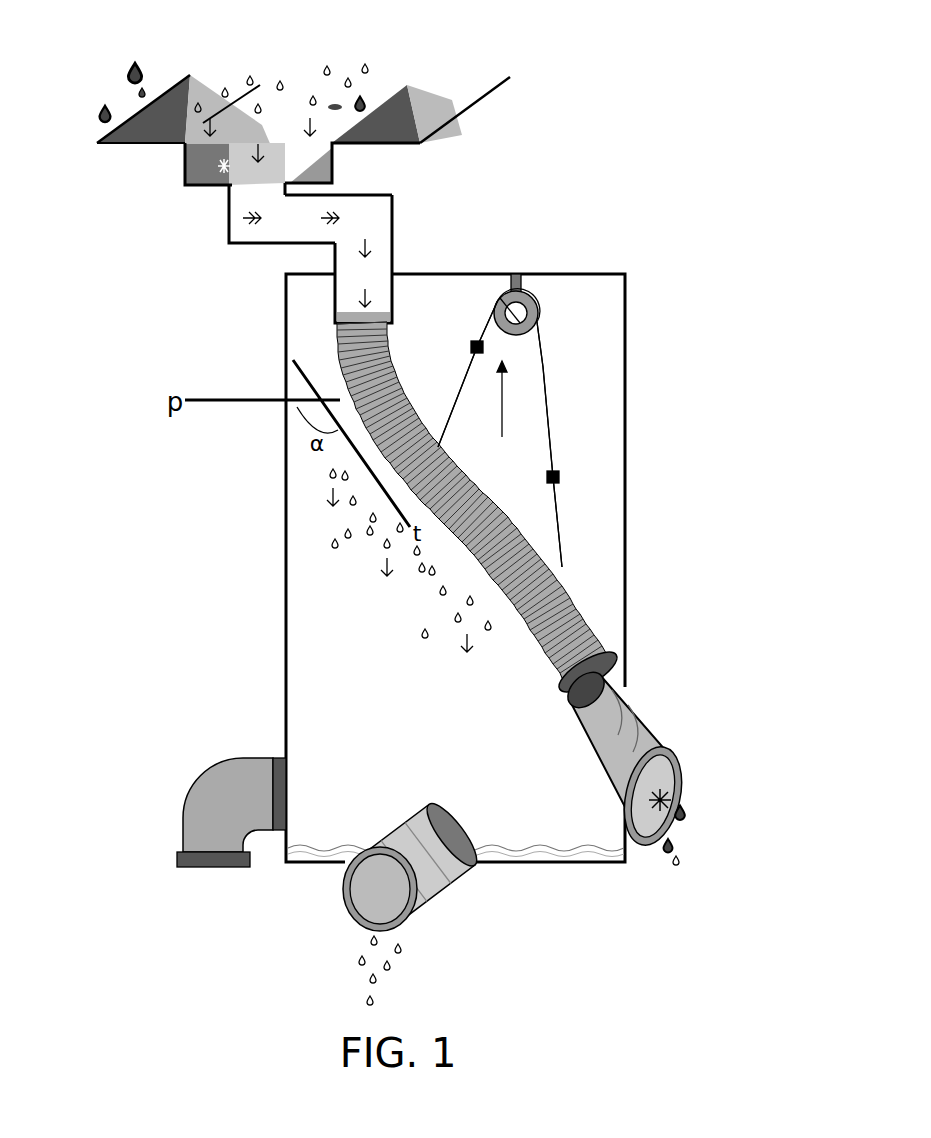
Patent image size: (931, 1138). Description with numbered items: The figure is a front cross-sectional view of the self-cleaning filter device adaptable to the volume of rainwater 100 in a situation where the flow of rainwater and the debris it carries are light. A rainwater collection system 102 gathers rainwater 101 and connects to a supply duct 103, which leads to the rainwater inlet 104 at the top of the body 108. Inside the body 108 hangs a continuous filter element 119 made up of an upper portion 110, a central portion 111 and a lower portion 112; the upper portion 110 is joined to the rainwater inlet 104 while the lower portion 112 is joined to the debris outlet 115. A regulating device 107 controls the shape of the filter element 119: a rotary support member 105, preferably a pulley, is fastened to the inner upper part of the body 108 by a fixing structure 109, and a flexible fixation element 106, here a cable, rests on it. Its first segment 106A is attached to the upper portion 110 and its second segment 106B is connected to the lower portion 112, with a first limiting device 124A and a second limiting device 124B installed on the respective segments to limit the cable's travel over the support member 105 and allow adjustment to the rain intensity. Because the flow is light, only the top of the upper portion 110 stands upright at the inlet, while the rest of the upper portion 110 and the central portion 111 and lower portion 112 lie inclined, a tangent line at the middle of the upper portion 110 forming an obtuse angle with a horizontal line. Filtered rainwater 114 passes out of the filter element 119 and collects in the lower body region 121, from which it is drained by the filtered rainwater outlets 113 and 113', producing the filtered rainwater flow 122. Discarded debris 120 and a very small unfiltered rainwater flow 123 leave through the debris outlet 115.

The self-cleaning filter device adaptable to the volume of rainwater 100 is at (226, 288).
The rainwater 101 is at (251, 73).
The rainwater collection system 102 is at (185, 165).
The supply duct 103 is at (229, 223).
The rainwater inlet 104 is at (335, 262).
The rotary support member 105 is at (497, 296).
The flexible fixation element 106 is at (557, 493).
The first segment 106A is at (443, 447).
The second segment 106B is at (545, 365).
The regulating device 107 is at (503, 415).
The body 108 is at (627, 407).
The fixing structure 109 is at (519, 283).
The upper portion 110 is at (335, 350).
The central portion 111 is at (460, 557).
The lower portion 112 is at (555, 660).
The filtered rainwater outlet 113 is at (195, 812).
The filtered rainwater outlet 113' is at (435, 864).
The filtered rainwater 114 is at (417, 605).
The debris outlet 115 is at (652, 722).
The filter element 119 is at (560, 600).
The discarded debris 120 is at (670, 805).
The lower body region 121 is at (615, 865).
The filtered rainwater flow 122 is at (395, 967).
The unfiltered rainwater flow 123 is at (680, 845).
The first limiting device 124A is at (477, 340).
The second limiting device 124B is at (555, 470).